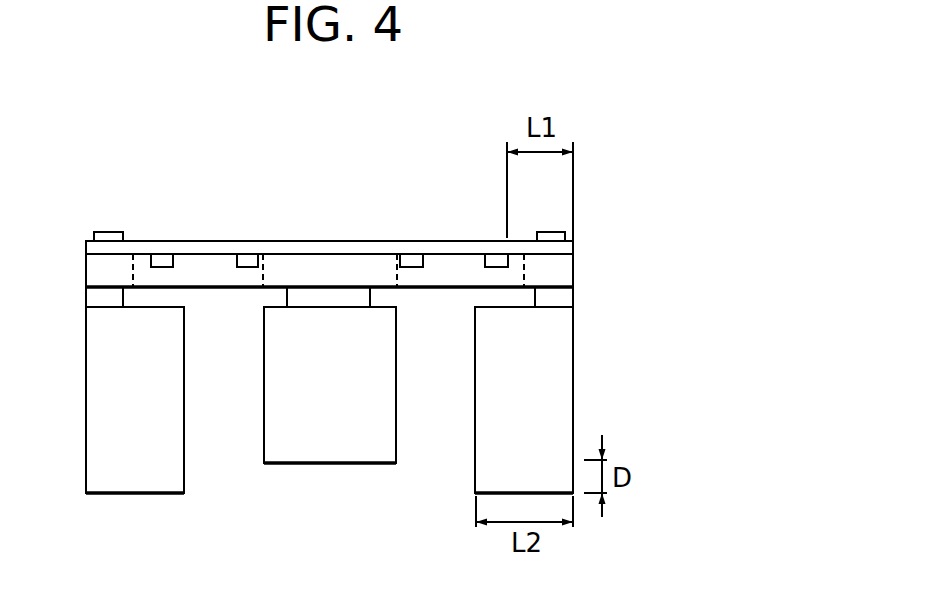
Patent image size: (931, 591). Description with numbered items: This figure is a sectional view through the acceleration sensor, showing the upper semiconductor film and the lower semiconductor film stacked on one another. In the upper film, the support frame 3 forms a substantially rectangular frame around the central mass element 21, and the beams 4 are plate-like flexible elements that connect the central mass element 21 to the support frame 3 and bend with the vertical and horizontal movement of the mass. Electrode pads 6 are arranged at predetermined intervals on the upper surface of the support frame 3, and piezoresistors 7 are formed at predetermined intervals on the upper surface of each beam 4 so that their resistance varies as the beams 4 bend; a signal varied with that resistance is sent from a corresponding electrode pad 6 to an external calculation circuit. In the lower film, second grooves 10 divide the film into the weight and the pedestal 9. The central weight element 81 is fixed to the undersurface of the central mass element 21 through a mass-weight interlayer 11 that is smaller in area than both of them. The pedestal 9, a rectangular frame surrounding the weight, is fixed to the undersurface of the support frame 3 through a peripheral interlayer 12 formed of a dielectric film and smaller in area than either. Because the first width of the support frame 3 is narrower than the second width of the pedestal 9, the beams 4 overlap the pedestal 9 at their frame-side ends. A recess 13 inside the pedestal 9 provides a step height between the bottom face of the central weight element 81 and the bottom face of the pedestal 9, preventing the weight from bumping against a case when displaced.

The support frame 3 is at (97, 269).
The beam 4 is at (207, 265).
The electrode pad 6 is at (110, 231).
The piezoresistor 7 is at (163, 257).
The pedestal 9 is at (97, 405).
The second groove 10 is at (222, 455).
The mass-weight interlayer 11 is at (357, 298).
The peripheral interlayer 12 is at (95, 300).
The recess 13 is at (287, 497).
The central mass element 21 is at (298, 265).
The central weight element 81 is at (337, 437).